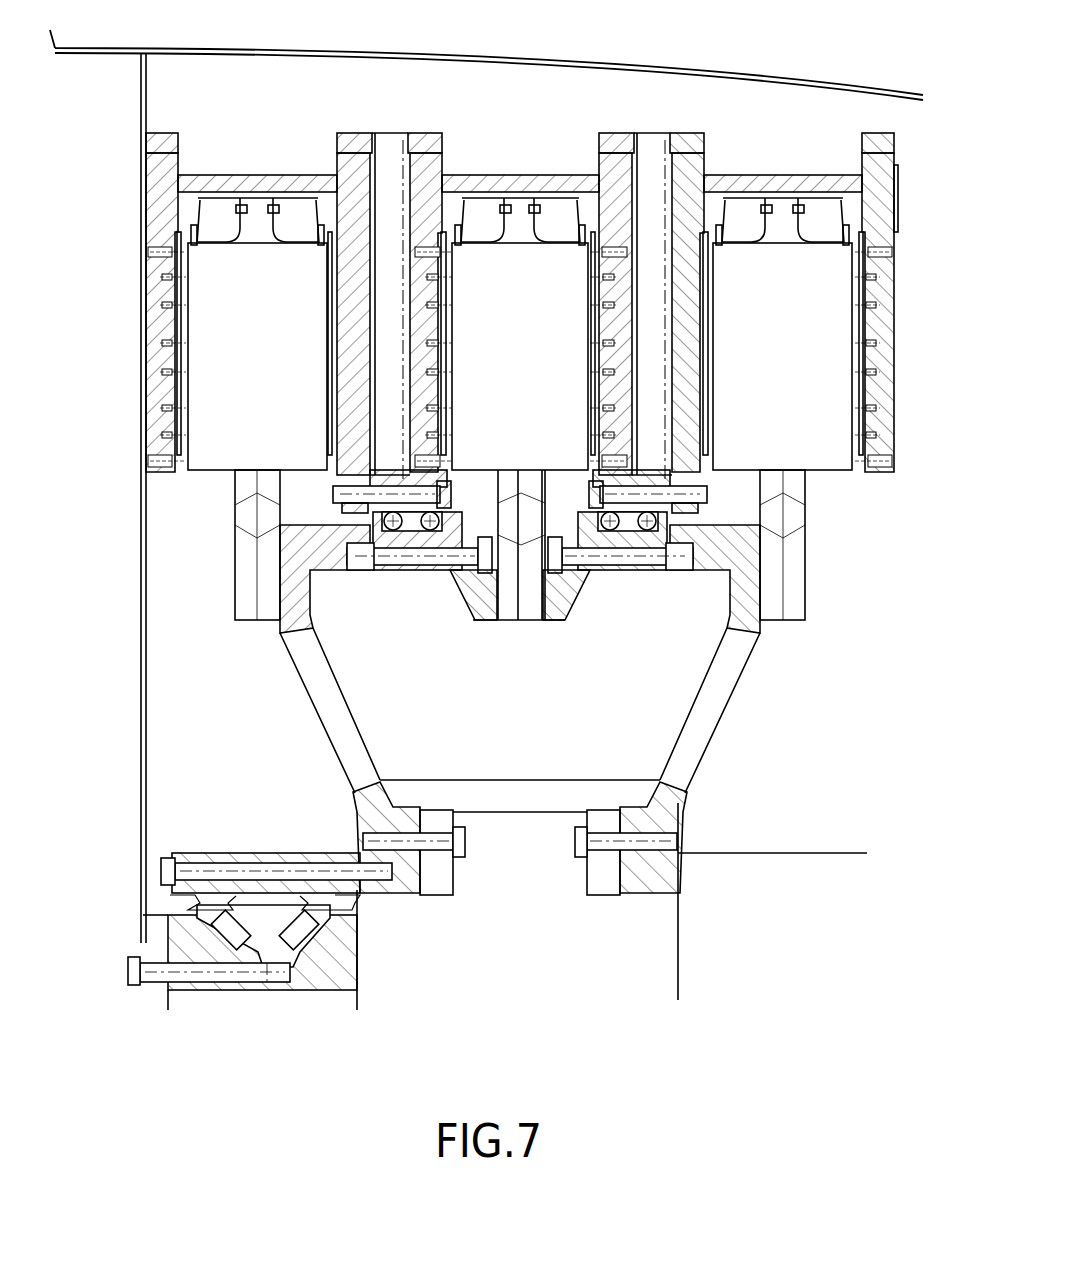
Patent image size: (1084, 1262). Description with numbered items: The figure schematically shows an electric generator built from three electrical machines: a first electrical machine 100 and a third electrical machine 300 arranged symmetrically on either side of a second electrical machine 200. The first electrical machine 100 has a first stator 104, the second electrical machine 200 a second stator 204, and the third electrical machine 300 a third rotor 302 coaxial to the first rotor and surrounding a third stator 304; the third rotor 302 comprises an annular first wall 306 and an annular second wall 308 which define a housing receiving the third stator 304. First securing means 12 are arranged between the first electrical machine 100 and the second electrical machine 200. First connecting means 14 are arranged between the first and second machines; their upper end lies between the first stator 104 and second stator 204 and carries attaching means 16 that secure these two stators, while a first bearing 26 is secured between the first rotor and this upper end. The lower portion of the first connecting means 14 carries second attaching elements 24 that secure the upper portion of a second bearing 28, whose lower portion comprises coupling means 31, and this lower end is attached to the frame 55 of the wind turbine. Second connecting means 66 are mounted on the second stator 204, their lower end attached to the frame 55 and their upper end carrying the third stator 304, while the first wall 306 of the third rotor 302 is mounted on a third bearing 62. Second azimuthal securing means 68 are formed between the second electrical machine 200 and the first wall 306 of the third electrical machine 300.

The first electrical machine 100 is at (258, 130).
The first securing means 12 is at (391, 130).
The second electrical machine 200 is at (510, 132).
The second azimuthal securing means 68 is at (649, 130).
The first wall 306 is at (698, 163).
The third electrical machine 300 is at (769, 126).
The third rotor 302 is at (903, 181).
The second wall 308 is at (886, 208).
The first stator 104 is at (274, 362).
The second stator 204 is at (540, 362).
The third stator 304 is at (805, 362).
The first bearing 26 is at (345, 520).
The attaching means 16 is at (335, 563).
The third bearing 62 is at (613, 580).
The first connecting means 14 is at (276, 670).
The second connecting means 66 is at (764, 670).
The frame 55 is at (757, 907).
The second attaching elements 24 is at (381, 880).
The second bearing 28 is at (372, 955).
The coupling means 31 is at (222, 968).